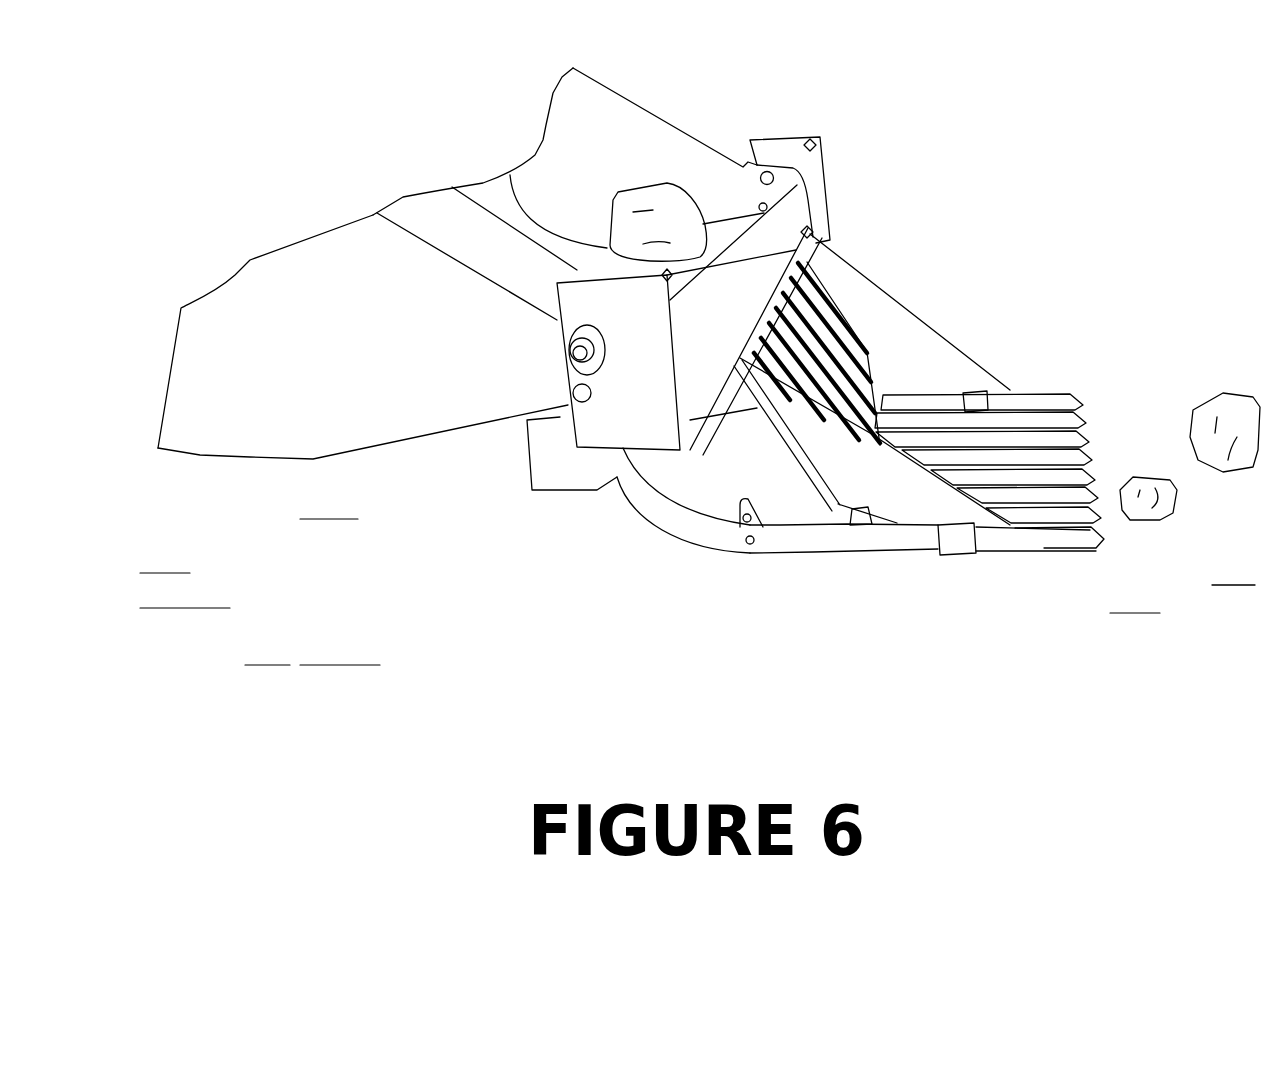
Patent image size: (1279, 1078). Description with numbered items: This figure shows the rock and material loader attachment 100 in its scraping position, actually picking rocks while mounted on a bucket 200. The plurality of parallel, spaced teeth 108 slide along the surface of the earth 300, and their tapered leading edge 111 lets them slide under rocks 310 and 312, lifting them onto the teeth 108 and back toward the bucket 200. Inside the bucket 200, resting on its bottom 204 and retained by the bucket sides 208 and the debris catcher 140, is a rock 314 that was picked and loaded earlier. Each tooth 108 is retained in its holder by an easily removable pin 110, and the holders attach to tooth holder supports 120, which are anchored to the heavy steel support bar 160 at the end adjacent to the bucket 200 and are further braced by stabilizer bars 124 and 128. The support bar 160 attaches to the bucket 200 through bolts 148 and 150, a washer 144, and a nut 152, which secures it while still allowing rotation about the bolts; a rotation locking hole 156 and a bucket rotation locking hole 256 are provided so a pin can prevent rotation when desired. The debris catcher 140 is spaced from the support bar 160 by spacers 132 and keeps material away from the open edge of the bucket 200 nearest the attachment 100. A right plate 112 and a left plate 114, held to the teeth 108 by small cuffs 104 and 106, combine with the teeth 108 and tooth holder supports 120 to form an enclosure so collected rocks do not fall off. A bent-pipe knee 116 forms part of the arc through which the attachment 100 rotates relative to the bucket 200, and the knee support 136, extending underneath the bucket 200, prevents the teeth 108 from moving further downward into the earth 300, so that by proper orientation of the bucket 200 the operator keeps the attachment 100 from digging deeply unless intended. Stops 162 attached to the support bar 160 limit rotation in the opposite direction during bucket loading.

The rock and material loader attachment 100 is at (1080, 176).
The cuff 104 is at (953, 553).
The cuff 106 is at (977, 400).
The tooth 108 is at (1067, 552).
The removable pin 110 is at (750, 544).
The leading edge 111 is at (1080, 393).
The right plate 112 is at (863, 487).
The left plate 114 is at (930, 353).
The knee 116 is at (787, 552).
The tooth holder support 120 is at (795, 499).
The stabilizer bar 124 is at (823, 308).
The stabilizer bar 128 is at (722, 423).
The spacer 132 is at (800, 226).
The knee support 136 is at (585, 468).
The debris catcher 140 is at (795, 210).
The washer 144 is at (577, 440).
The bolt 148 is at (578, 360).
The bolt 150 is at (770, 171).
The nut 152 is at (583, 388).
The rotation locking hole 156 is at (572, 448).
The support bar 160 is at (634, 410).
The stop 162 is at (814, 140).
The bucket 200 is at (662, 48).
The bottom 204 is at (500, 220).
The bucket side 208 is at (327, 332).
The bucket rotation locking hole 256 is at (778, 197).
The earth 300 is at (1233, 585).
The rock 310 is at (1237, 400).
The rock 312 is at (1157, 517).
The rock 314 is at (673, 195).